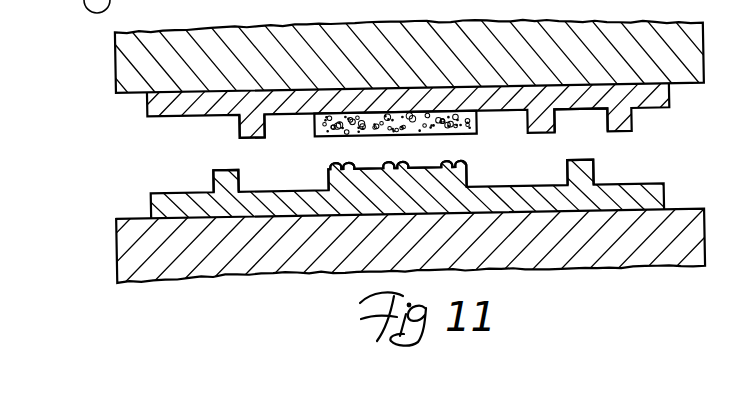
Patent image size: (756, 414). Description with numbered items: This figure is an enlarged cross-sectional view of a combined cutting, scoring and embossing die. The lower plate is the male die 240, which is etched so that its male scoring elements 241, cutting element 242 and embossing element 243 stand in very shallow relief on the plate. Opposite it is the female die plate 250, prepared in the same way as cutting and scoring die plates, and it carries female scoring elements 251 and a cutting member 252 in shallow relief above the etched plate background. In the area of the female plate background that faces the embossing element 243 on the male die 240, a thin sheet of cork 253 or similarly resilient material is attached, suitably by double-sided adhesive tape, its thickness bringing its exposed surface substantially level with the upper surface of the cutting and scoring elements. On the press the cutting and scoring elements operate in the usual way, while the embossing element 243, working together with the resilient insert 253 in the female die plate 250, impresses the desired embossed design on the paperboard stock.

The male die 240 is at (664, 195).
The male scoring elements 241 is at (594, 168).
The cutting element 242 is at (213, 167).
The embossing element 243 is at (467, 169).
The female die plate 250 is at (672, 100).
The female scoring elements 251 is at (550, 125).
The cutting member 252 is at (252, 137).
The thin sheet of cork 253 is at (478, 120).